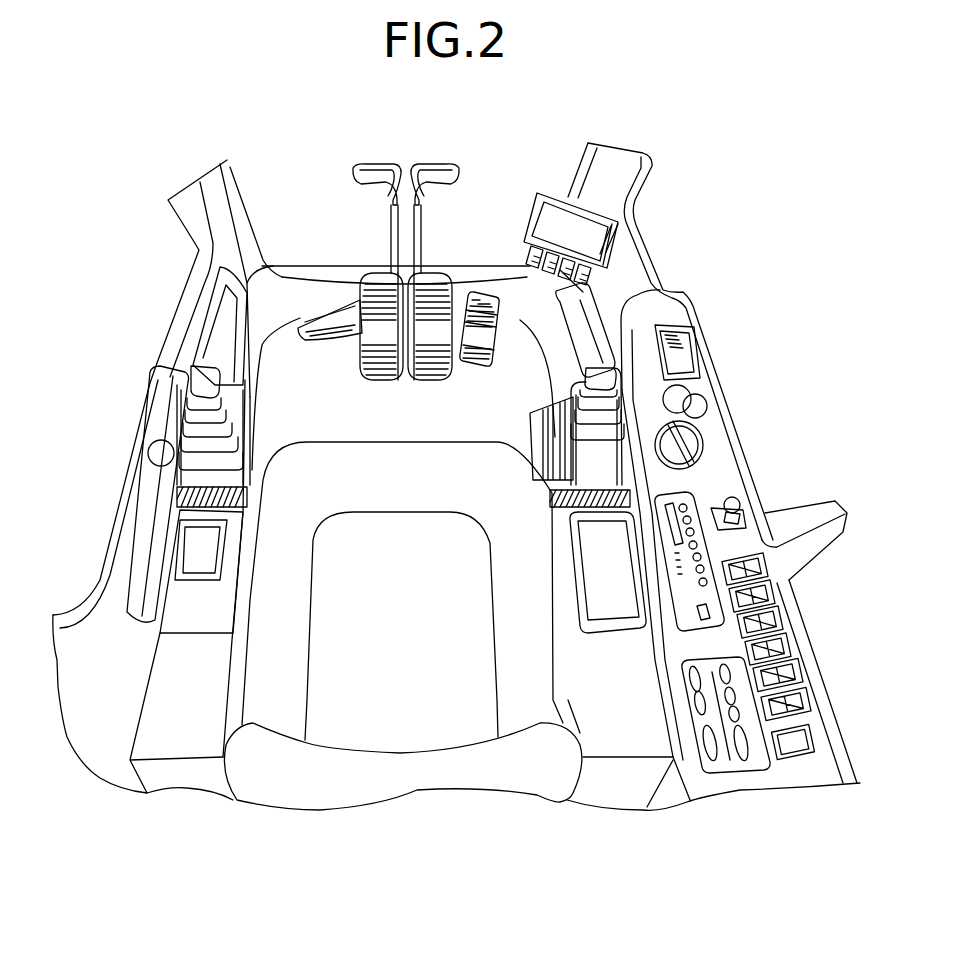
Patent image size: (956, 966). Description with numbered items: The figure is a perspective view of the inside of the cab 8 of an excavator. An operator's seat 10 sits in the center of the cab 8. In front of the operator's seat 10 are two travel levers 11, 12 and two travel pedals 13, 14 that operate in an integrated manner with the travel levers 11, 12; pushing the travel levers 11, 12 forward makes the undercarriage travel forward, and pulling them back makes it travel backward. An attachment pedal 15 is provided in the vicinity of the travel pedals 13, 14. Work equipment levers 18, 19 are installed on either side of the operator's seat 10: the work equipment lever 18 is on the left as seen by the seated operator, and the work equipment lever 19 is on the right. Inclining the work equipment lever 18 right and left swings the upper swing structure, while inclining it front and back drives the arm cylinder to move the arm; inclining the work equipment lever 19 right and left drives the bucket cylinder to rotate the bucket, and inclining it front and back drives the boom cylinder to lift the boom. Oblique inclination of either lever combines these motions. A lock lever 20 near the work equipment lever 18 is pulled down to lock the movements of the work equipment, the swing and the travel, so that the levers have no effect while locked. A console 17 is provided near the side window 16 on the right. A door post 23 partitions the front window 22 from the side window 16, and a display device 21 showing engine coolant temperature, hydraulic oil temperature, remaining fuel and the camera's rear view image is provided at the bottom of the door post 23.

The cab 8 is at (697, 153).
The operator's seat 10 is at (388, 745).
The travel lever 11 is at (372, 168).
The travel lever 12 is at (442, 166).
The travel pedal 13 is at (388, 384).
The travel pedal 14 is at (430, 384).
The attachment pedal 15 is at (480, 293).
The side window 16 is at (104, 478).
The console 17 is at (733, 481).
The work equipment lever 18 is at (220, 323).
The work equipment lever 19 is at (577, 300).
The lock lever 20 is at (150, 380).
The display device 21 is at (545, 180).
The front window 22 is at (282, 166).
The door post 23 is at (620, 160).